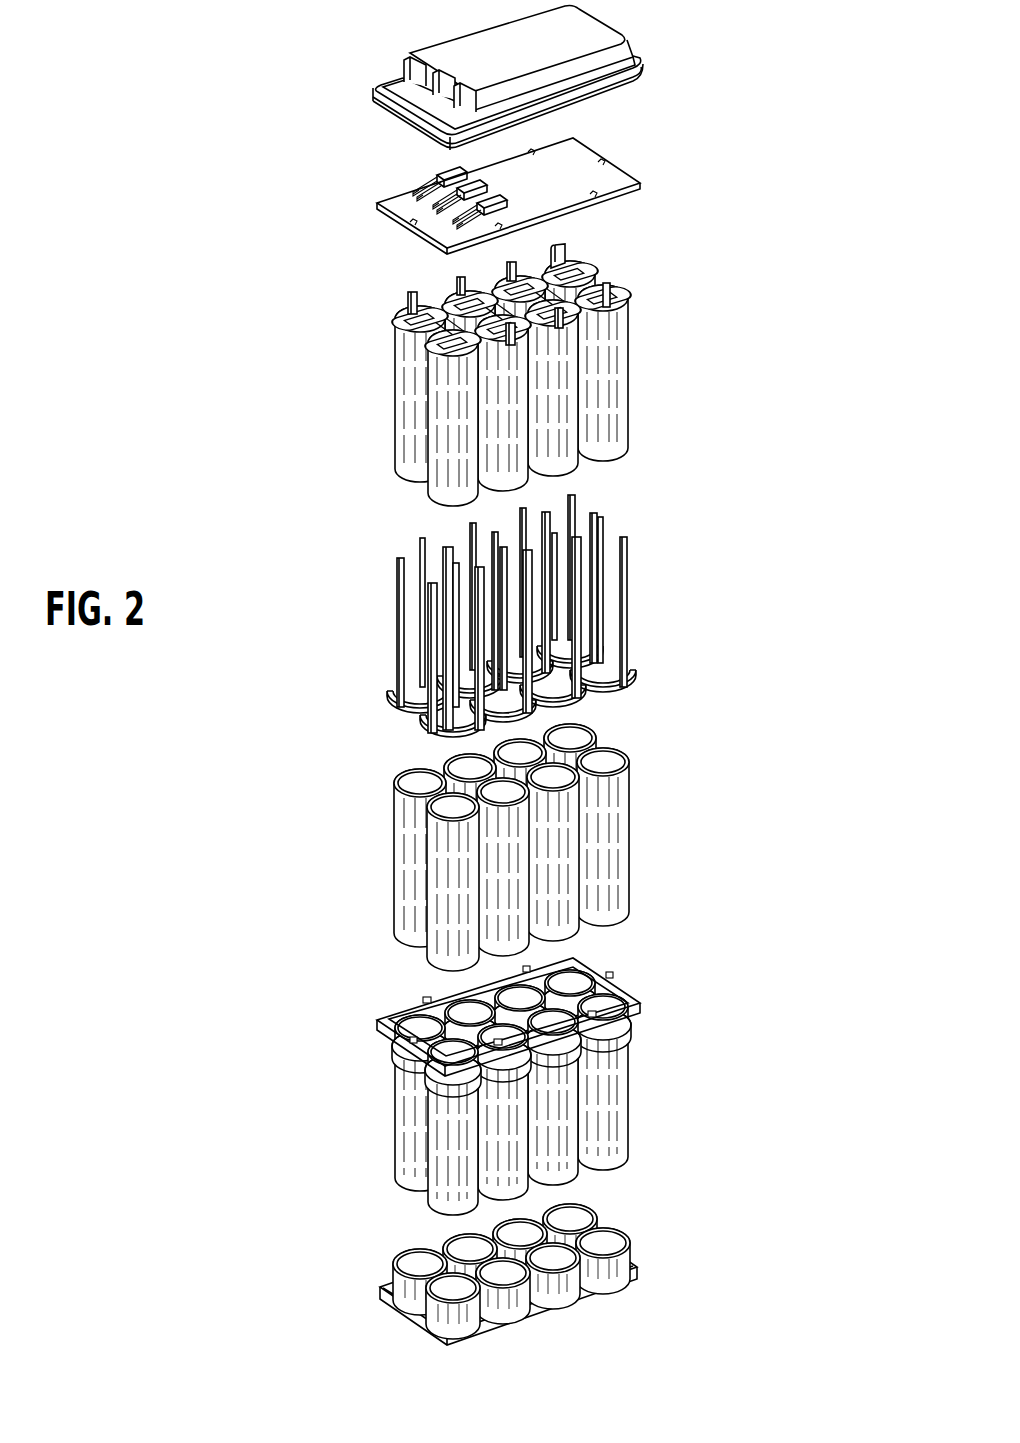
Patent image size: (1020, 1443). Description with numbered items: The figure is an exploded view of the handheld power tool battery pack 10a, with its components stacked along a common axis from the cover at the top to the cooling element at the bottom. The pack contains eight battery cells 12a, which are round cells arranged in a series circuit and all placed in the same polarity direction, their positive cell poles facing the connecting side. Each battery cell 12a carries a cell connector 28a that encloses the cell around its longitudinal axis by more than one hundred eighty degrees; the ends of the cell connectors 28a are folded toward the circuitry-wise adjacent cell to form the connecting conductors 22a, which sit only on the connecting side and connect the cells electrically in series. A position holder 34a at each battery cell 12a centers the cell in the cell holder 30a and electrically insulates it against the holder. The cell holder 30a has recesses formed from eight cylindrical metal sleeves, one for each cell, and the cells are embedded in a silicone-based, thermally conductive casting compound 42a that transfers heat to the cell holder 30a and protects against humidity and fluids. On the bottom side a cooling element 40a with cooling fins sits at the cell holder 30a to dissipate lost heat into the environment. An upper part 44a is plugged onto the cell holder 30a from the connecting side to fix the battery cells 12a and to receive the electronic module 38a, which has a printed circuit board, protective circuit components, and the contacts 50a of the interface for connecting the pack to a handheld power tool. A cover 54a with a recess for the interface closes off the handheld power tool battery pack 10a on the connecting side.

The handheld power tool battery pack 10a is at (790, 72).
The battery cell 12a is at (413, 397).
The connecting conductor 22a is at (453, 306).
The cell connector 28a is at (567, 253).
The cell holder 30a is at (408, 1110).
The position holder 34a is at (400, 633).
The electronic module 38a is at (607, 177).
The cooling element 40a is at (393, 1300).
The casting compound 42a is at (408, 857).
The upper part 44a is at (623, 1013).
The contacts 50a is at (437, 185).
The cover 54a is at (447, 58).